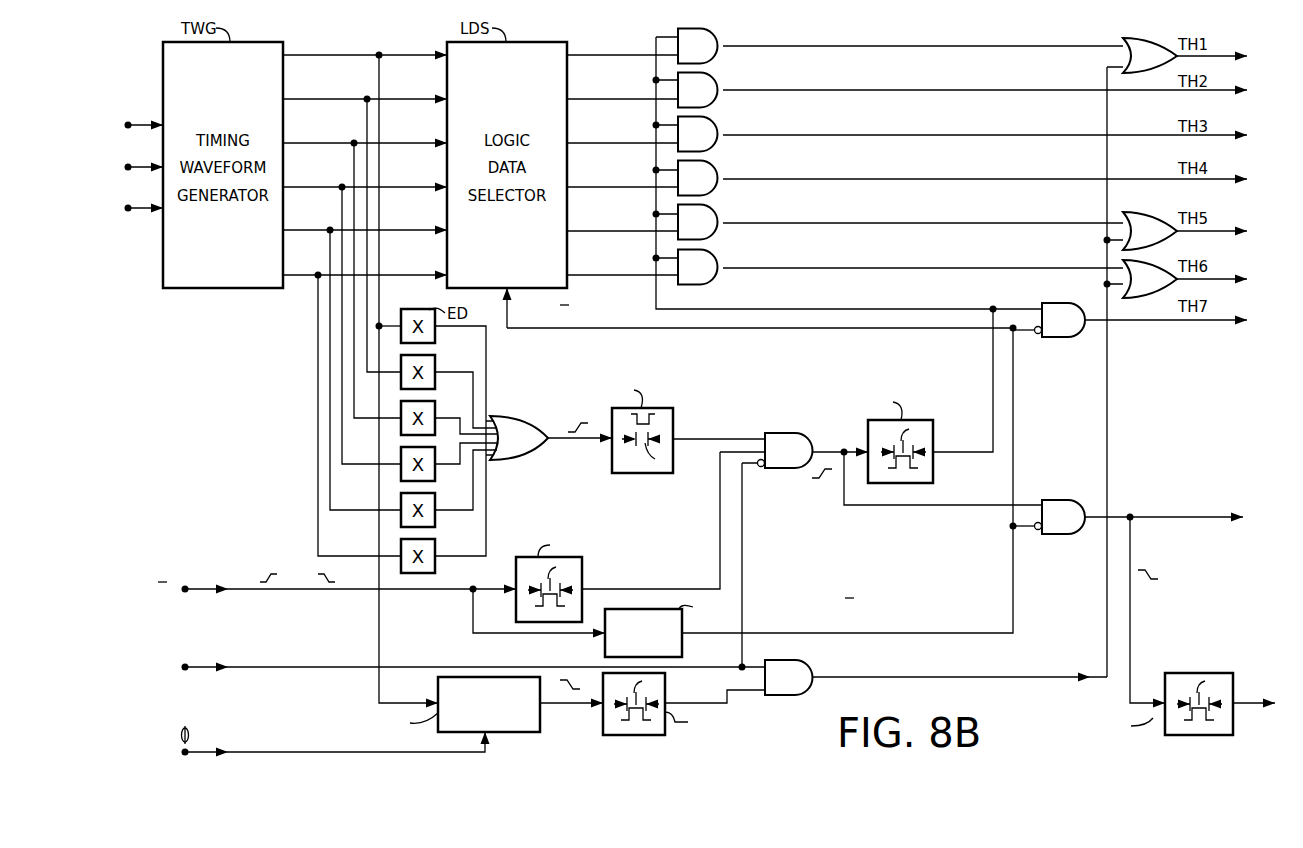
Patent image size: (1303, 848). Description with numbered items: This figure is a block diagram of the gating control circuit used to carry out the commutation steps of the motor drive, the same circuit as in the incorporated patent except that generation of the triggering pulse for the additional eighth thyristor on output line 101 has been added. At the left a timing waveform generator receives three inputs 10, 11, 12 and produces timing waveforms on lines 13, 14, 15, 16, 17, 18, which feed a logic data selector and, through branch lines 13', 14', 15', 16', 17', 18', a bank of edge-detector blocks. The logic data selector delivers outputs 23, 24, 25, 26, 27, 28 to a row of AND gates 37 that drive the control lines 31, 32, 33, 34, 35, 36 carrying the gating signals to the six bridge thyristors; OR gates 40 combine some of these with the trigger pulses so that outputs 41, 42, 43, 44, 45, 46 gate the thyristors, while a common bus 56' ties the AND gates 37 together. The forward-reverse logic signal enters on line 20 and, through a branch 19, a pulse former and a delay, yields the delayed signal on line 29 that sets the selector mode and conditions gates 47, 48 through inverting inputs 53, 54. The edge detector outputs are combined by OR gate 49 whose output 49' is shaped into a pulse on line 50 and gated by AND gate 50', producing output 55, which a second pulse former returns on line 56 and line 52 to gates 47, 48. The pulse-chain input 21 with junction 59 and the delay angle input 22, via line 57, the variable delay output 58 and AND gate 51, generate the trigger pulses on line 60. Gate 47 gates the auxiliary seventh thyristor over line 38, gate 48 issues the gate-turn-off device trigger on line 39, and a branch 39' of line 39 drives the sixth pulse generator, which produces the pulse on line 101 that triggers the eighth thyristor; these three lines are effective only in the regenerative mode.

The input terminal A 10 is at (133, 122).
The input terminal B 11 is at (133, 167).
The input terminal C 12 is at (144, 211).
The timing waveform line 1a 13 is at (365, 44).
The timing waveform line 1b 14 is at (365, 88).
The timing waveform line 1c 15 is at (365, 132).
The timing waveform line 1d 16 is at (365, 176).
The timing waveform line 1e 17 is at (365, 218).
The timing waveform line 1f 18 is at (365, 263).
The branch line to edge detector 13' is at (407, 380).
The branch line to edge detector 14' is at (378, 253).
The branch line to edge detector 15' is at (371, 298).
The branch line to edge detector 16' is at (367, 344).
The branch line to edge detector 17' is at (362, 384).
The branch line to edge detector 18' is at (334, 414).
The F/R branch line to delay 19 is at (470, 600).
The line 20 is at (242, 589).
The PCH input 21 is at (242, 666).
The delay angle input 22 is at (295, 752).
The logic data selector output 2a 23 is at (632, 54).
The logic data selector output 2b 24 is at (632, 98).
The logic data selector output 2c 25 is at (632, 142).
The logic data selector output 2d 26 is at (632, 185).
The logic data selector output 2e 27 is at (632, 230).
The logic data selector output 2f 28 is at (632, 274).
The delayed F/R signal line 29 is at (556, 331).
The line 31 is at (898, 46).
The line 32 is at (900, 90).
The line 33 is at (900, 135).
The line 34 is at (900, 179).
The line 35 is at (900, 223).
The line 36 is at (900, 268).
The AND gates 37 is at (716, 32).
The line 38 is at (1218, 320).
The line 39 is at (1166, 496).
The GTO branch line to pulse former 39' is at (1154, 612).
The OR gates 40 is at (1128, 38).
The thyristor TH1 trigger output 41 is at (1218, 56).
The thyristor TH2 trigger output 42 is at (1218, 92).
The thyristor TH3 trigger output 43 is at (1218, 136).
The thyristor TH4 trigger output 44 is at (1218, 180).
The thyristor TH5 trigger output 45 is at (1218, 230).
The thyristor TH6 trigger output 46 is at (1218, 278).
The AND gate 47 is at (1060, 303).
The AND gate 48 is at (1083, 500).
The OR gate 49 is at (491, 441).
The OR gate output 49' is at (580, 448).
The pulse former PL1 output 50 is at (685, 427).
The AND gate 50' is at (697, 535).
The AND gate 51 is at (782, 660).
The connection line 52 is at (983, 504).
The inverting input 53 is at (1040, 335).
The inverting input 54 is at (1024, 533).
The AND gate output 55 is at (824, 451).
The pulse former PL2 output line 56 is at (929, 395).
The common bus line 56' is at (828, 173).
The line to variable delay 57 is at (379, 643).
The variable delay output 58 is at (570, 705).
The junction 59 is at (746, 667).
The trigger pulses line 60 is at (878, 677).
The output line 101 is at (1244, 715).